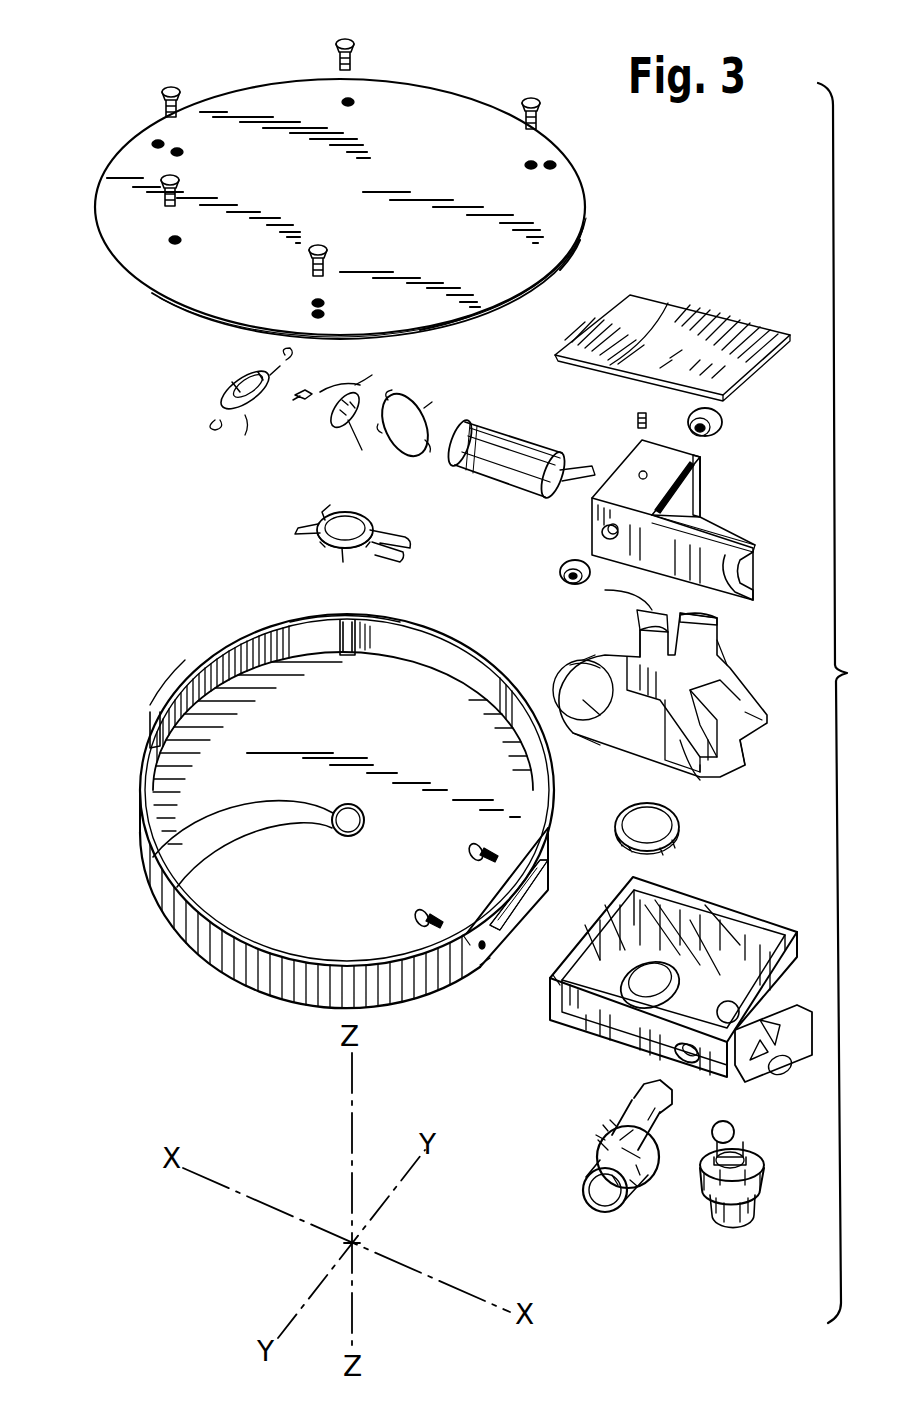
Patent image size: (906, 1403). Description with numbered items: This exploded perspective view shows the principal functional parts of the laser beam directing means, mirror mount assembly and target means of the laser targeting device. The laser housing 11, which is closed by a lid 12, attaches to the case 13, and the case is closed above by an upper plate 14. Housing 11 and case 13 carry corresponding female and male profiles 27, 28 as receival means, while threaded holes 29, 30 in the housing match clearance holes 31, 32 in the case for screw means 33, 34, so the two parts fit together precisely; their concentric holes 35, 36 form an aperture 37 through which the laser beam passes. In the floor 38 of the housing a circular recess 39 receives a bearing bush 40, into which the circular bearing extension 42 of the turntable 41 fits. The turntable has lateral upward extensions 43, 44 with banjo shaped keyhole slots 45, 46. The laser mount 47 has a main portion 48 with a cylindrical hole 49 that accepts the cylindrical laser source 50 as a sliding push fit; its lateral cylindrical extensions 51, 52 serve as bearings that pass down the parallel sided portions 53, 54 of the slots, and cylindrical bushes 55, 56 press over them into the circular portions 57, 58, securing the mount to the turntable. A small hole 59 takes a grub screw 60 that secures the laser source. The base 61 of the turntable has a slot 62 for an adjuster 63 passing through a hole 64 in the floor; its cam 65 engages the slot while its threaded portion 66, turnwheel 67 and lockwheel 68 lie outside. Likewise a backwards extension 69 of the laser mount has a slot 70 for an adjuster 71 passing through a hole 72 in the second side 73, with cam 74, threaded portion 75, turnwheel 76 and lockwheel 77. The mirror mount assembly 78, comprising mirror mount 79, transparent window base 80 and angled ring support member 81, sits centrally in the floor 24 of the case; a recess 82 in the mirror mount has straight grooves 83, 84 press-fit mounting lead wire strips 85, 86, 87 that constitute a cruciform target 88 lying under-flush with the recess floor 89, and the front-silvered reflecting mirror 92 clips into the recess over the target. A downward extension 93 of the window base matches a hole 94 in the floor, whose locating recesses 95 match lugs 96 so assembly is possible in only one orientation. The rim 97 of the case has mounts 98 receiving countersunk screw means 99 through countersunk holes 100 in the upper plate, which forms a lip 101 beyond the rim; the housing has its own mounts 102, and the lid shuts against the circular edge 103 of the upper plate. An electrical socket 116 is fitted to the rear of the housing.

The housing 11 is at (790, 975).
The lid 12 is at (785, 350).
The case 13 is at (195, 940).
The upper plate 14 is at (125, 242).
The floor 24 is at (170, 820).
The female profile 27 is at (565, 980).
The male profile 28 is at (480, 965).
The hole 29 is at (555, 840).
The hole 30 is at (585, 960).
The hole 31 is at (557, 858).
The hole 32 is at (485, 952).
The screw means 33 is at (495, 845).
The screw means 34 is at (420, 930).
The concentric hole 35 is at (620, 912).
The concentric hole 36 is at (485, 948).
The aperture 37 is at (583, 918).
The floor 38 is at (660, 910).
The circular recess 39 is at (640, 995).
The bearing bush 40 is at (622, 812).
The turntable 41 is at (568, 686).
The circular bearing extension 42 is at (680, 770).
The lateral upward extension 43 is at (572, 666).
The lateral upward extension 44 is at (638, 640).
The keyhole slot 45 is at (592, 660).
The keyhole slot 46 is at (625, 588).
The laser mount 47 is at (590, 512).
The main portion 48 is at (630, 470).
The cylindrical hole 49 is at (690, 505).
The laser source 50 is at (520, 446).
The lateral cylindrical extension 51 is at (600, 535).
The lateral cylindrical extension 52 is at (702, 450).
The parallel sided portion 53 is at (578, 698).
The parallel sided portion 54 is at (692, 612).
The cylindrical bush 55 is at (560, 575).
The cylindrical bush 56 is at (722, 420).
The circular portion 57 is at (585, 735).
The circular portion 58 is at (728, 645).
The small hole 59 is at (642, 470).
The grub screw 60 is at (690, 432).
The base 61 is at (750, 700).
The slot 62 is at (752, 745).
The adjuster 63 is at (745, 1148).
The hole 64 is at (730, 1000).
The cam 65 is at (735, 1128).
The threaded portion 66 is at (762, 1168).
The turnwheel 67 is at (748, 1222).
The lockwheel 68 is at (760, 1195).
The backwards extension 69 is at (708, 538).
The slot 70 is at (764, 571).
The adjuster 71 is at (612, 1123).
The hole 72 is at (685, 1065).
The second side 73 is at (585, 1020).
The cam 74 is at (650, 1088).
The threaded portion 75 is at (665, 1150).
The turnwheel 76 is at (585, 1172).
The lockwheel 77 is at (600, 1132).
The mirror mount assembly 78 is at (302, 467).
The mirror mount 79 is at (222, 405).
The transparent window base 80 is at (322, 540).
The angled ring support member 81 is at (425, 455).
The recess 82 is at (228, 388).
The straight groove 83 is at (255, 376).
The straight groove 84 is at (292, 358).
The lead wire strip 85 is at (295, 398).
The lead wire strip 86 is at (335, 385).
The lead wire strip 87 is at (395, 390).
The cruciform target 88 is at (328, 437).
The floor 89 is at (243, 424).
The reflecting mirror 92 is at (365, 449).
The downward extension 93 is at (318, 515).
The hole 94 is at (160, 885).
The locating recess 95 is at (180, 905).
The lug 96 is at (346, 560).
The rim 97 is at (298, 620).
The mount 98 is at (155, 708).
The countersunk screw means 99 is at (352, 42).
The countersunk hole 100 is at (540, 162).
The lip 101 is at (566, 258).
The mount 102 is at (730, 900).
The circular edge 103 is at (470, 330).
The electrical socket 116 is at (775, 1072).